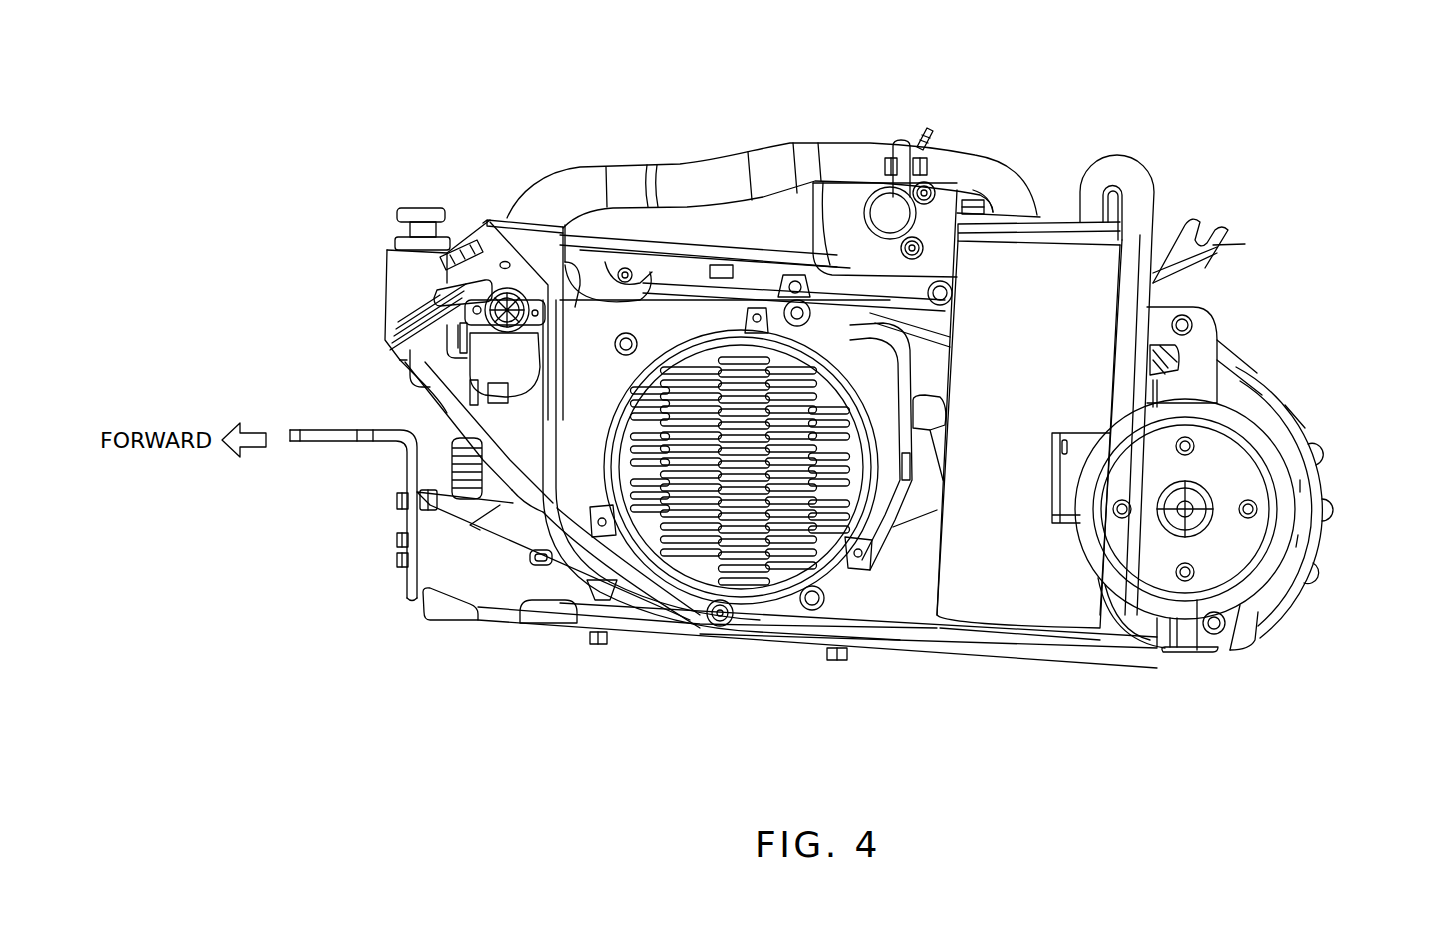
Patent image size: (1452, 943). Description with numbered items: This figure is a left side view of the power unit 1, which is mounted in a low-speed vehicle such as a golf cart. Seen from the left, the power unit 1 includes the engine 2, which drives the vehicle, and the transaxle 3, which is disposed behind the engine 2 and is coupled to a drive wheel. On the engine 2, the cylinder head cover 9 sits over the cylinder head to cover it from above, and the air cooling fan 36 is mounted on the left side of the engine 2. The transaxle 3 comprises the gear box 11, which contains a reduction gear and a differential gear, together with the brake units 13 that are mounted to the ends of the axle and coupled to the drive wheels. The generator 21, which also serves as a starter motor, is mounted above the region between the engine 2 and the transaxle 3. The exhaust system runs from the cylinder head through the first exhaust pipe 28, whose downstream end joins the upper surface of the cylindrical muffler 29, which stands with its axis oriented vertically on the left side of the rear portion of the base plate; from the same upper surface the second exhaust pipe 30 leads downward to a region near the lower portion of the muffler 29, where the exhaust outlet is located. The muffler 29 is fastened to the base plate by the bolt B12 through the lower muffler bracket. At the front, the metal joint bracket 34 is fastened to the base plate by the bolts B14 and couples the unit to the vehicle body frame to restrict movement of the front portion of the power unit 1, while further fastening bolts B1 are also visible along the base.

The power unit 1 is at (453, 147).
The engine 2 is at (383, 276).
The transaxle 3 is at (1336, 464).
The cylinder head cover 9 is at (388, 244).
The gear box 11 is at (1300, 420).
The brake units 13 is at (1248, 582).
The generator 21 is at (945, 208).
The first exhaust pipe 28 is at (714, 163).
The muffler 29 is at (1012, 600).
The second exhaust pipe 30 is at (1152, 178).
The joint bracket 34 is at (323, 428).
The air cooling fan 36 is at (700, 560).
The bolt B1 is at (598, 645).
The bolt B12 is at (1214, 652).
The bolts B14 is at (396, 541).